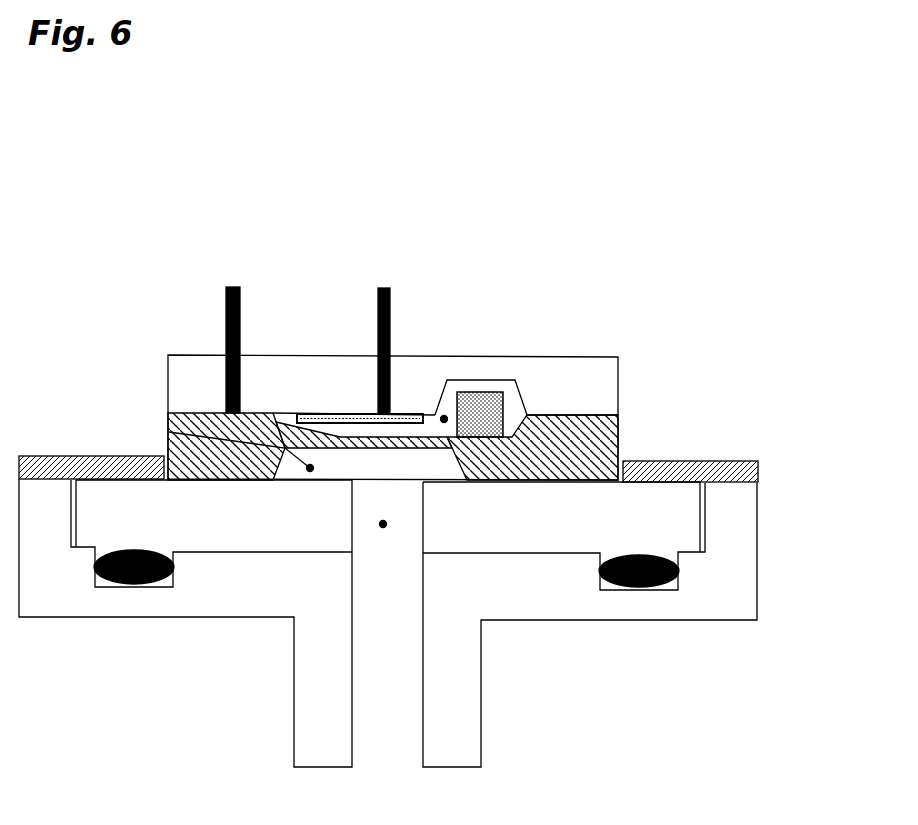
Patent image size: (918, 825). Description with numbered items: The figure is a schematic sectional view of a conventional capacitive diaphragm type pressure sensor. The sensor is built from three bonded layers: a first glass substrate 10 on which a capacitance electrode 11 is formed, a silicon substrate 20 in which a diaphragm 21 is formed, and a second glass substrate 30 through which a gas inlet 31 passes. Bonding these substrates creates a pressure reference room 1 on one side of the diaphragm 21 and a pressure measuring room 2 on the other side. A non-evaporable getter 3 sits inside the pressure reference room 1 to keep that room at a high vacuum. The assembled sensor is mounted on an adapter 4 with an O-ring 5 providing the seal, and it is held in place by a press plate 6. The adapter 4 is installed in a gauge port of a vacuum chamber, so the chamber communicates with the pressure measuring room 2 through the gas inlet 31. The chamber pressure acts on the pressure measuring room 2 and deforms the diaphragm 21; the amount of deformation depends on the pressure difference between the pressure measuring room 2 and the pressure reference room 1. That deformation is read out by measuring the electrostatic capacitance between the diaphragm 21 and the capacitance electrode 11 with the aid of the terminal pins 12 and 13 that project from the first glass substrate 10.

The pressure reference room 1 is at (445, 413).
The pressure measuring room 2 is at (168, 432).
The non-evaporable getter 3 is at (480, 390).
The adapter 4 is at (567, 598).
The O-ring 5 is at (680, 572).
The press plate 6 is at (685, 462).
The first glass substrate 10 is at (588, 372).
The capacitance electrode 11 is at (313, 413).
The terminal pin 12 is at (390, 300).
The terminal pin 13 is at (240, 337).
The silicon substrate 20 is at (597, 453).
The diaphragm 21 is at (225, 400).
The second glass substrate 30 is at (678, 517).
The gas inlet 31 is at (383, 524).